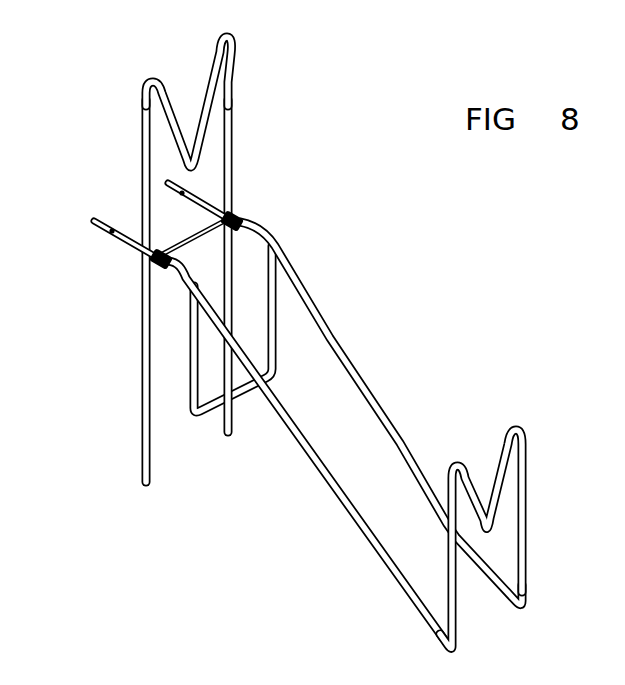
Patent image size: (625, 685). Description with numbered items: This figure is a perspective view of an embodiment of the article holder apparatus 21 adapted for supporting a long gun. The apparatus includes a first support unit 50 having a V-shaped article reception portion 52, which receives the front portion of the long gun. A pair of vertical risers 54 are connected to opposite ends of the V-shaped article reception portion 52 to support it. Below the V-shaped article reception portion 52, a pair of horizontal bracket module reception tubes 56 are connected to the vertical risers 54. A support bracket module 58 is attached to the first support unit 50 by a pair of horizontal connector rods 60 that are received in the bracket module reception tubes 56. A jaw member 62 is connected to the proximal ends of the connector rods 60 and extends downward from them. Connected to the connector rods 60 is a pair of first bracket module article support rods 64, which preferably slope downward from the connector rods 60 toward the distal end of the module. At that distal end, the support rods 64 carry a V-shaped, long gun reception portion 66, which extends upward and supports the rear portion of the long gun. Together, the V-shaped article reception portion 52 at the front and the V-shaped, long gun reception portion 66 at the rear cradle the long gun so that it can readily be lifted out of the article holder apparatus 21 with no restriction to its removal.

The article holder apparatus 21 is at (330, 148).
The first support unit 50 is at (152, 259).
The V-shaped article reception portion 52 is at (213, 82).
The vertical risers 54 is at (140, 282).
The horizontal bracket module reception tubes 56 is at (110, 242).
The support bracket module 58 is at (378, 435).
The horizontal connector rods 60 is at (245, 225).
The jaw member 62 is at (202, 418).
The first bracket module article support rods 64 is at (367, 387).
The V-shaped, long gun reception portion 66 is at (504, 437).